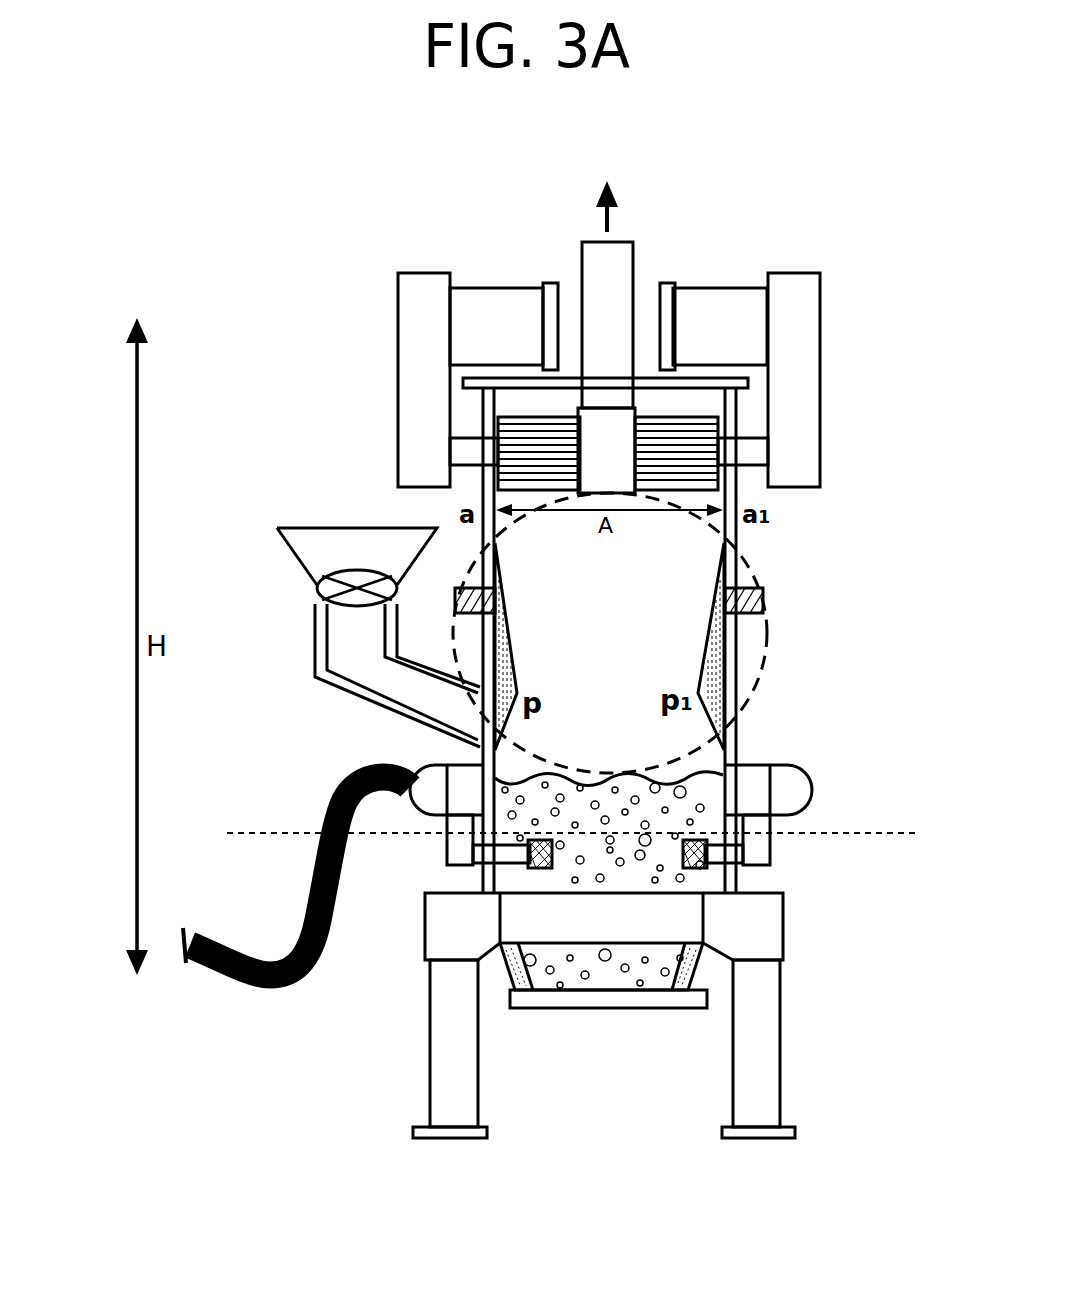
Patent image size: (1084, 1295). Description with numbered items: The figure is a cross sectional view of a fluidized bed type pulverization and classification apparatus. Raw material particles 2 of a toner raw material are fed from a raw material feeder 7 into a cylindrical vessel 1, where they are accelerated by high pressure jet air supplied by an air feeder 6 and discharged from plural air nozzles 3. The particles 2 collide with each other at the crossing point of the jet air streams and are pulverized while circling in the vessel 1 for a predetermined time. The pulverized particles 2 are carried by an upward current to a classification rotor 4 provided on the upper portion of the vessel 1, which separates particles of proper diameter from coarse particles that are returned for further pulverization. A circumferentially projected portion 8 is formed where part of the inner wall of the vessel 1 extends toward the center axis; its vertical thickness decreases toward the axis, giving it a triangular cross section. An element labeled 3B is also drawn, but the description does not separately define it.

The cylindrical vessel 1 is at (672, 552).
The raw material particles 2 is at (653, 777).
The air nozzles 3 is at (540, 868).
The tapered inner guide member 3B is at (767, 658).
The classification rotor 4 is at (500, 450).
The air feeder 6 is at (247, 985).
The raw material feeder 7 is at (330, 528).
The circumferentially projected portion 8 is at (482, 650).